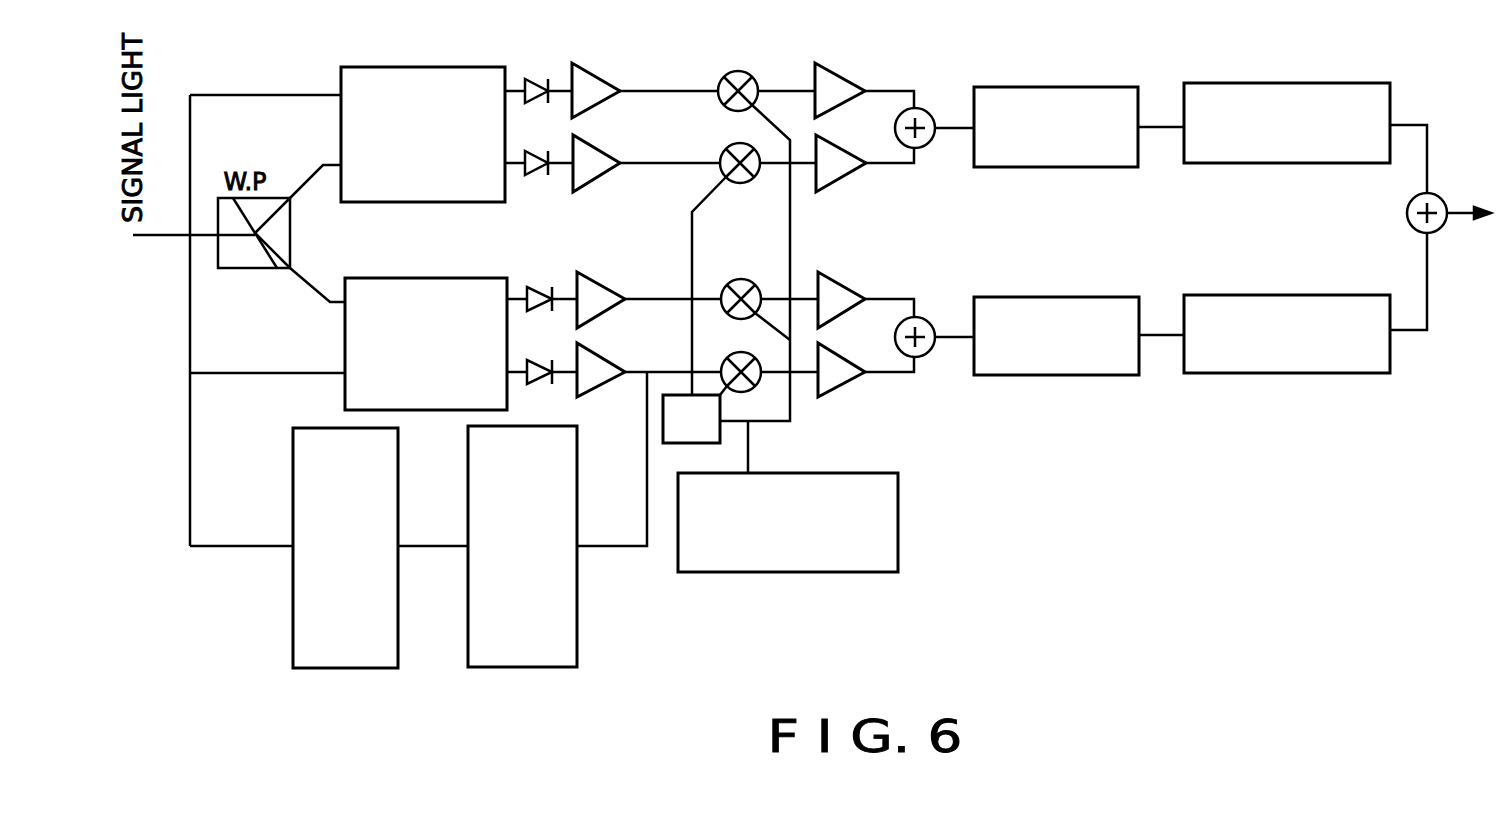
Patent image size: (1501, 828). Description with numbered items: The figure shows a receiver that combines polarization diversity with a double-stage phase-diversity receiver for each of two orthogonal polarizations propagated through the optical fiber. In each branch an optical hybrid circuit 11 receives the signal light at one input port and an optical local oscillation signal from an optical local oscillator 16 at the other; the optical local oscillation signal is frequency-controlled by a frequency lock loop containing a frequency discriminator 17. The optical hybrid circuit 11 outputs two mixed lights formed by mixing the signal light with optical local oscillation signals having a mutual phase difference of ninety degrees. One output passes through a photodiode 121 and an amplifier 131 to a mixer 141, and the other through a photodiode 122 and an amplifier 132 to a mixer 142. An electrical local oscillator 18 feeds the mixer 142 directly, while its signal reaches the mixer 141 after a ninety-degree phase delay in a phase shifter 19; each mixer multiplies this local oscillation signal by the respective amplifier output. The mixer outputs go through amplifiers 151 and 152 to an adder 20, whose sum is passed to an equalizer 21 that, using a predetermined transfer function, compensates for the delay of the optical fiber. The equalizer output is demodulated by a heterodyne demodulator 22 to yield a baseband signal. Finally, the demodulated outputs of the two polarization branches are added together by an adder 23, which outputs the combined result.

The optical hybrid circuit 11 is at (464, 67).
The photodiode 121 is at (533, 80).
The photodiode 122 is at (533, 175).
The amplifier 131 is at (610, 79).
The amplifier 132 is at (600, 176).
The mixer 141 is at (735, 71).
The mixer 142 is at (738, 183).
The amplifier 151 is at (845, 72).
The amplifier 152 is at (832, 185).
The optical local oscillator 16 is at (293, 628).
The frequency discriminator 17 is at (468, 628).
The electrical local oscillator 18 is at (898, 543).
The phase shifter 19 is at (670, 443).
The adder 20 is at (930, 110).
The equalizer 21 is at (1084, 86).
The heterodyne demodulator 22 is at (1320, 82).
The adder 23 is at (1446, 196).